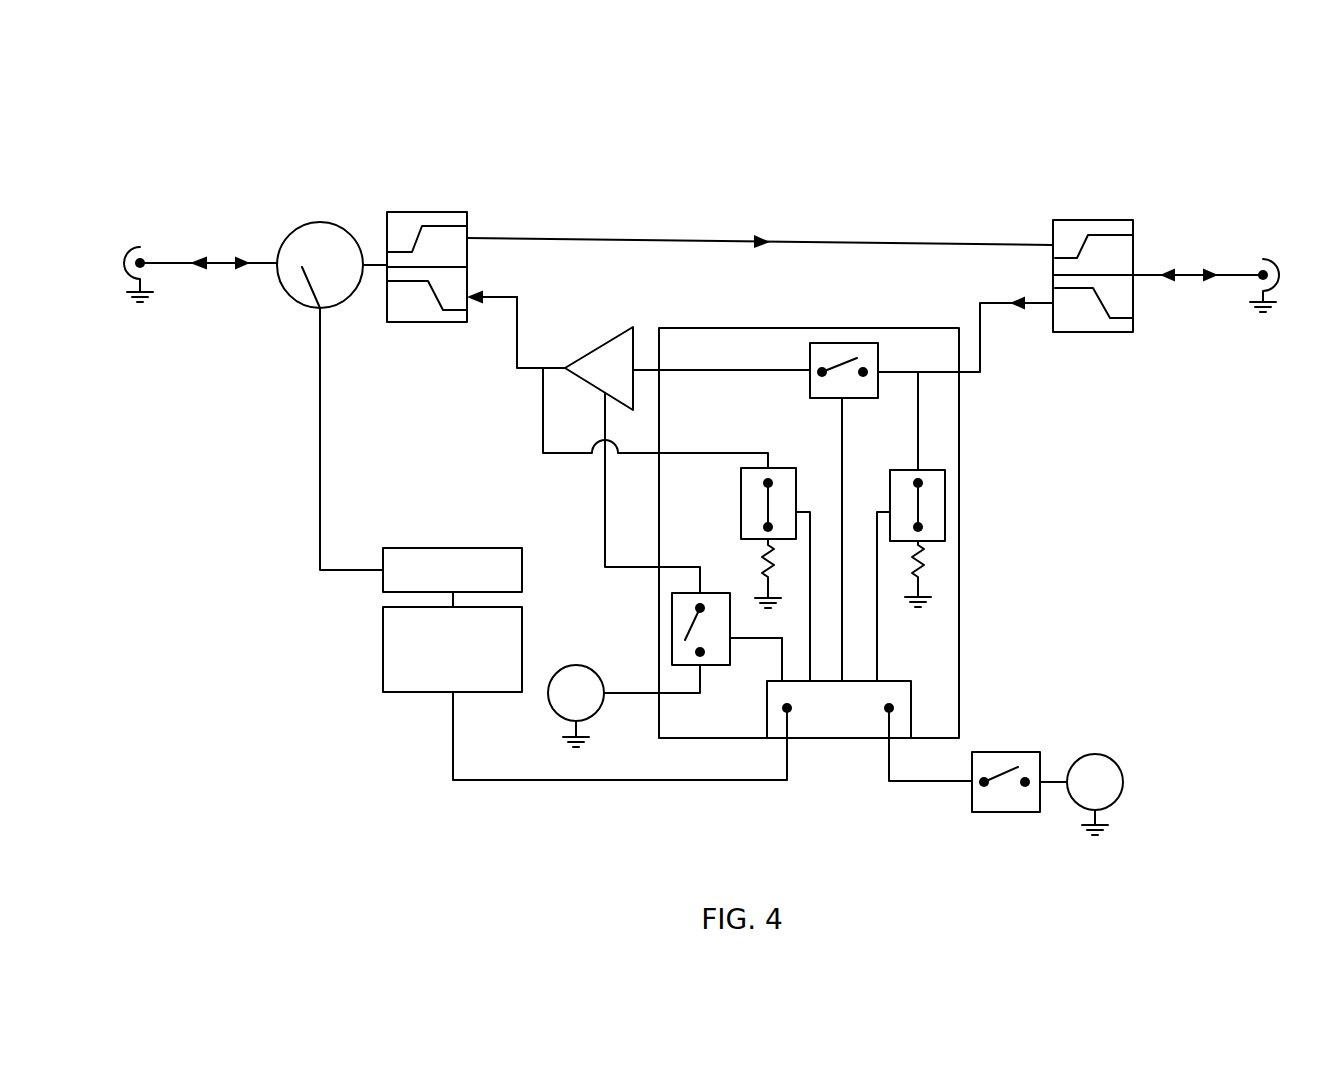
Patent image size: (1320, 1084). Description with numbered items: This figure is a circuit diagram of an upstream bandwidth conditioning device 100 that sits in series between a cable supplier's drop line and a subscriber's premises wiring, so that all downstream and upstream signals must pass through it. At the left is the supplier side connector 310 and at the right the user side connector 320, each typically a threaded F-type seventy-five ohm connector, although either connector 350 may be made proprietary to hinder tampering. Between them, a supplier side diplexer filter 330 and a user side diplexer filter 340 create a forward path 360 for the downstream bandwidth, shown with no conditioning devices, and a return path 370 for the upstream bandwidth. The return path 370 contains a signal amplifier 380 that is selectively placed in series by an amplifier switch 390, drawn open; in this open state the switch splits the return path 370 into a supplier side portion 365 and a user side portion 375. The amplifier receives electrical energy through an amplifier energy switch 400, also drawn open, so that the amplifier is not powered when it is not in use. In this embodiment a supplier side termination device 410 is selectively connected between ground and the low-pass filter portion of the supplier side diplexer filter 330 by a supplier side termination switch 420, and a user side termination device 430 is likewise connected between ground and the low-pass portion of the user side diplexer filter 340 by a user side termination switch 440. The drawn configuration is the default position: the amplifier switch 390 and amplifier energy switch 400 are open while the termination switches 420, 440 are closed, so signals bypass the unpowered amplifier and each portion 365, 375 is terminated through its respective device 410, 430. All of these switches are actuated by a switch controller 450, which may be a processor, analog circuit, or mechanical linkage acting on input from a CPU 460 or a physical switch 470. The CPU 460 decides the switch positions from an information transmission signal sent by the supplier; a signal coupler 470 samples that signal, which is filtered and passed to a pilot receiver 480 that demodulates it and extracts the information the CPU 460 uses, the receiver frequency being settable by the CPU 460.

The upstream bandwidth conditioning device 100 is at (918, 100).
The supplier side connector 310 is at (136, 248).
The user side connector 320 is at (1280, 261).
The supplier side diplexer filter 330 is at (427, 212).
The user side diplexer filter 340 is at (1088, 220).
The connector 350 is at (217, 265).
The forward path 360 is at (620, 238).
The return path 370 is at (779, 337).
The supplier side portion 365 is at (518, 340).
The user side portion 375 is at (982, 332).
The signal amplifier 380 is at (676, 460).
The amplifier switch 390 is at (842, 343).
The amplifier energy switch 400 is at (732, 665).
The supplier side termination device 410 is at (757, 565).
The supplier side termination switch 420 is at (793, 468).
The user side termination device 430 is at (927, 573).
The user side termination switch 440 is at (908, 470).
The switch controller 450 is at (833, 740).
The CPU 460 is at (452, 649).
The signal coupler 470 is at (300, 222).
The pilot receiver 480 is at (452, 577).